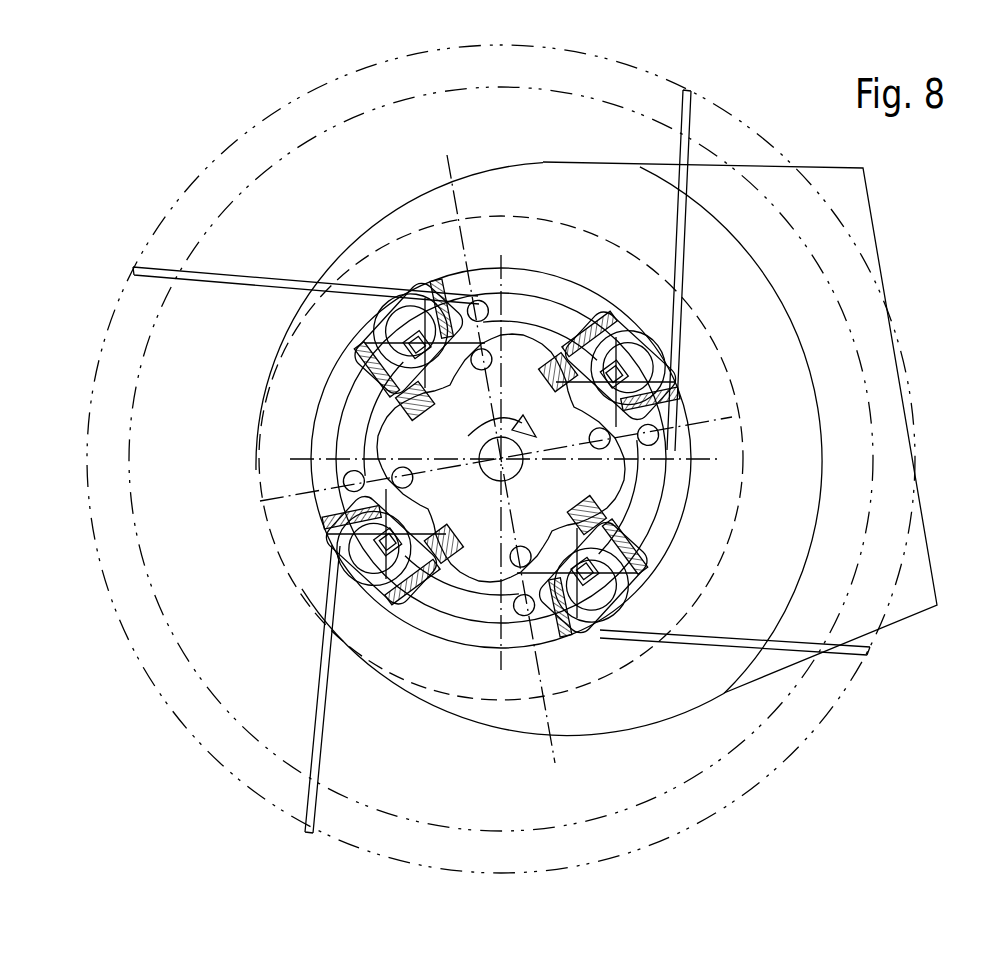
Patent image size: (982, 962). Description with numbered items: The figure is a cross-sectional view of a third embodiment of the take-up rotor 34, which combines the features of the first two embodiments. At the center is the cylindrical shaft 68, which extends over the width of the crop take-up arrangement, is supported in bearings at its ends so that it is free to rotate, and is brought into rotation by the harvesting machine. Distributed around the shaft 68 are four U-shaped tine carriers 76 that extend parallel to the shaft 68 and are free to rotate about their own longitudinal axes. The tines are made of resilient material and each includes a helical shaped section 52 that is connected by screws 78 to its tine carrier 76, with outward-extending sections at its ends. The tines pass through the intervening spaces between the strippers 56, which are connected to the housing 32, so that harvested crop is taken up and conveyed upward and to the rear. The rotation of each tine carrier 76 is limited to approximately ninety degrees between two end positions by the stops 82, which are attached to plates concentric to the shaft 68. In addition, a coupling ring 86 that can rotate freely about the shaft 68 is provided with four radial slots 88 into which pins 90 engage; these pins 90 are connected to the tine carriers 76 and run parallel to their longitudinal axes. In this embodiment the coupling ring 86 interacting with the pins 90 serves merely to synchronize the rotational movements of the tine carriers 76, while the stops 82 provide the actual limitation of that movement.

The housing 32 is at (913, 618).
The take-up rotor 34 is at (206, 808).
The helical shaped section 52 is at (640, 613).
The strippers 56 is at (546, 163).
The shaft 68 is at (497, 475).
The tine carrier 76 is at (683, 405).
The screws 78 is at (615, 620).
The stops 82 is at (640, 503).
The coupling ring 86 is at (555, 320).
The radial slots 88 is at (660, 480).
The pins 90 is at (503, 477).